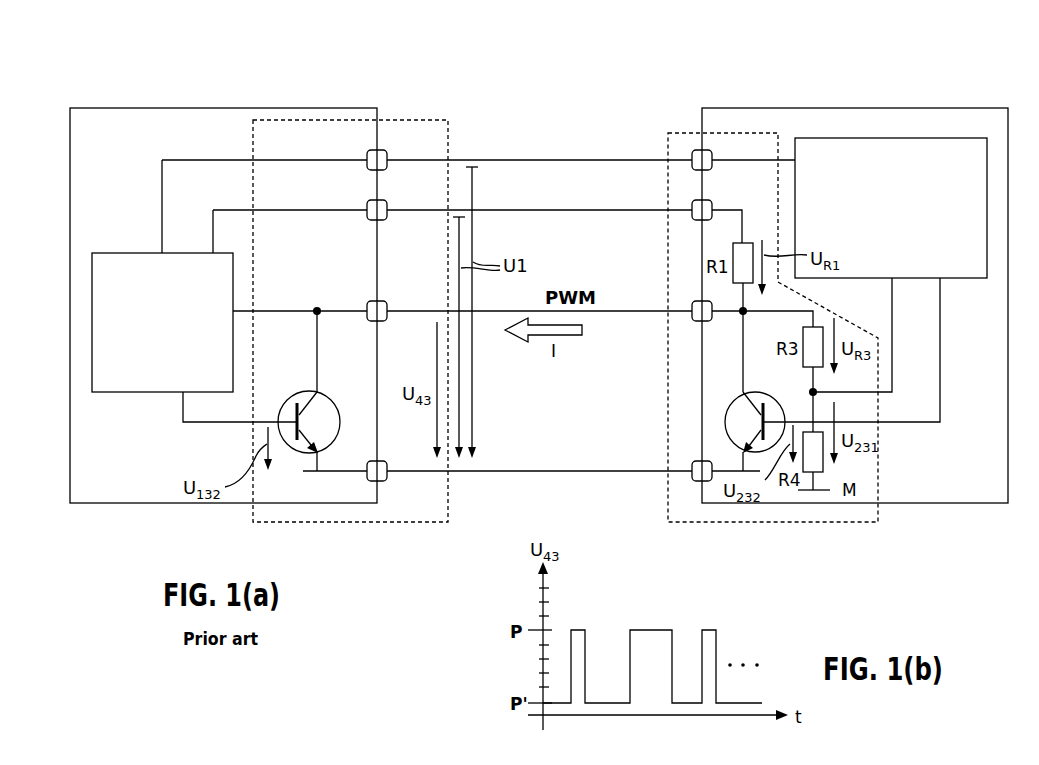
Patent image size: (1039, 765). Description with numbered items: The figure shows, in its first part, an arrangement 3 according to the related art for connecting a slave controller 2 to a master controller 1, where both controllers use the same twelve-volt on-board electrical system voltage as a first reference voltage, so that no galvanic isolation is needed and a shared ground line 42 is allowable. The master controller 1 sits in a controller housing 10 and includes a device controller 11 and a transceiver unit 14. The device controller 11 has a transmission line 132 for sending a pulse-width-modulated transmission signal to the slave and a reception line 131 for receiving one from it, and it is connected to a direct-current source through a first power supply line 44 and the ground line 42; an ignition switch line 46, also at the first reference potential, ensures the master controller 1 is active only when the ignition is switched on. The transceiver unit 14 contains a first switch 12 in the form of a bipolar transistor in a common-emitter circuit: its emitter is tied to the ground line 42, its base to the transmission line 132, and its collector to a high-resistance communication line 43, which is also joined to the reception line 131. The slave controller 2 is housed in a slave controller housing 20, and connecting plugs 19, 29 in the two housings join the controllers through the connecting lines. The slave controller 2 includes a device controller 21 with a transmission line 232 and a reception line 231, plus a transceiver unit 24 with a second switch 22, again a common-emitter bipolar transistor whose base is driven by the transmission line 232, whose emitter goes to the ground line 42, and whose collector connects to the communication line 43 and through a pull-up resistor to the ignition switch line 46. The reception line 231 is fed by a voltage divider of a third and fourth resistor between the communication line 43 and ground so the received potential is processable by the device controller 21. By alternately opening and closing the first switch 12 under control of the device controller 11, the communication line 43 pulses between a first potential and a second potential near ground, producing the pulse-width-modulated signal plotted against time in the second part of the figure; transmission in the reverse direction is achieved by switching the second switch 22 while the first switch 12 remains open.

The arrangement 3 is at (305, 80).
The controller housing 10 is at (120, 108).
The master controller 1 is at (120, 191).
The device controller 11 is at (176, 321).
The first switch 12 is at (287, 405).
The reception line 131 is at (287, 310).
The transmission line 132 is at (217, 424).
The transceiver unit 14 is at (418, 522).
The connecting plug 19 is at (367, 158).
The first power supply line 44 is at (418, 158).
The ignition switch line 46 is at (413, 212).
The communication line 43 is at (413, 315).
The ground line 42 is at (413, 470).
The slave controller housing 20 is at (955, 108).
The slave controller 2 is at (972, 472).
The device controller 21 is at (905, 207).
The second switch 22 is at (730, 412).
The reception line 231 is at (890, 293).
The transmission line 232 is at (943, 293).
The transceiver unit 24 is at (803, 513).
The connecting plug 29 is at (692, 305).